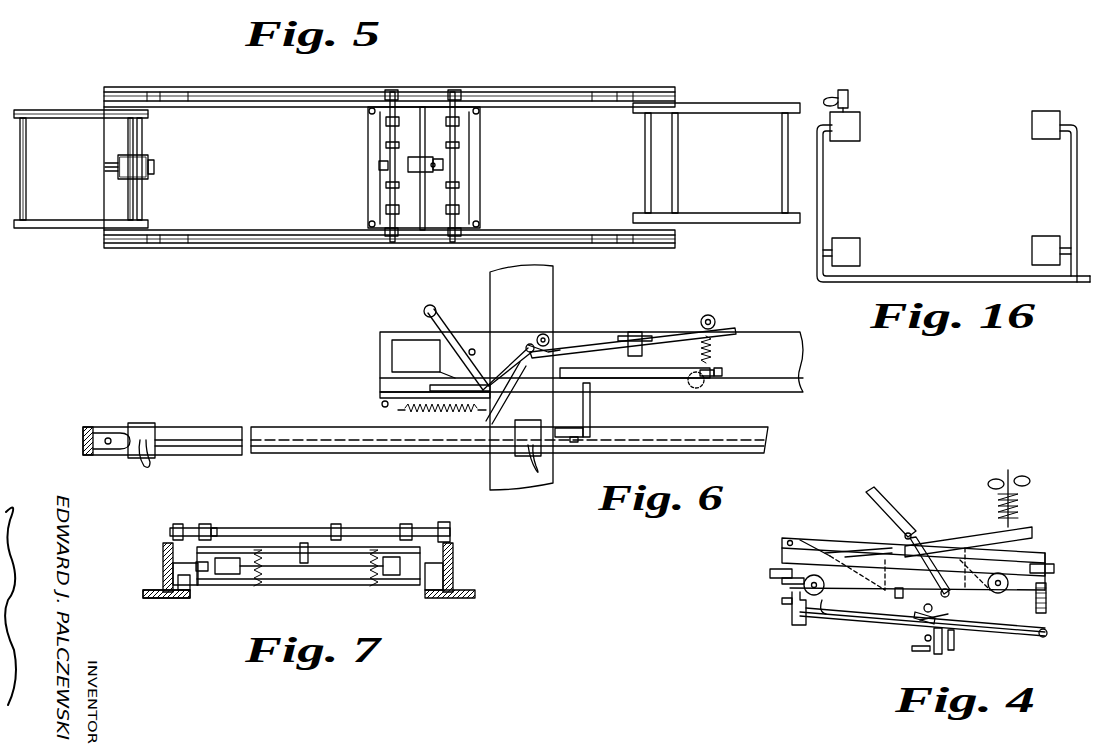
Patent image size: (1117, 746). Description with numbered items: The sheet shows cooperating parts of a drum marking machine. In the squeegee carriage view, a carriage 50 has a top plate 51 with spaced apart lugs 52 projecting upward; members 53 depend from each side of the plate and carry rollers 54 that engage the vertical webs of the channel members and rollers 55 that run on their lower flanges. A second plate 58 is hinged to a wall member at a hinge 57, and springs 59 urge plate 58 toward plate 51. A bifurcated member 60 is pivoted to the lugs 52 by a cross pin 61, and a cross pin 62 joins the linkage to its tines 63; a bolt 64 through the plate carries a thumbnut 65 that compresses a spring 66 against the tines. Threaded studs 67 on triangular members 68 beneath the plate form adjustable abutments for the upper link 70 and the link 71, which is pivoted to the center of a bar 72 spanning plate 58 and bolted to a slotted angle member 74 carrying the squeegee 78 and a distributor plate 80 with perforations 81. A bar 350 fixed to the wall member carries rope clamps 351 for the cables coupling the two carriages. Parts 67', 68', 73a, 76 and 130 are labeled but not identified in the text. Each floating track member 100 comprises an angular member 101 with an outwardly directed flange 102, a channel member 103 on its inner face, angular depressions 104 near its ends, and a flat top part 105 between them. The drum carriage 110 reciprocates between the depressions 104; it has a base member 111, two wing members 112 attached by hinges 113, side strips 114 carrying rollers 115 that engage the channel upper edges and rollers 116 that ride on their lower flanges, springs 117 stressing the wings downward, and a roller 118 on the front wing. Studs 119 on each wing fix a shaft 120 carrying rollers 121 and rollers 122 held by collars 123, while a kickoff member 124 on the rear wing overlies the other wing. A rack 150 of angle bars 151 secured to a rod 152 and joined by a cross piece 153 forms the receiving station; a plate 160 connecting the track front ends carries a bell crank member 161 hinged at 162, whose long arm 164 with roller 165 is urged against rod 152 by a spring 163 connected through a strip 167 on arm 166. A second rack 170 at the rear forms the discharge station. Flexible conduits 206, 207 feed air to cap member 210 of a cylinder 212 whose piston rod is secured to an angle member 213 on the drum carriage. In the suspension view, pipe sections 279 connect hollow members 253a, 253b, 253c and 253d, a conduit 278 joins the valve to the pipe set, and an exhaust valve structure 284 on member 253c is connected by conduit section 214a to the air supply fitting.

In FIG. 4, the carriage 50 is at (810, 626).
In FIG. 4, the top plate 51 is at (1036, 551).
In FIG. 4, the lugs 52 is at (782, 548).
In FIG. 4, the members 53 is at (783, 584).
In FIG. 4, the rollers 54 is at (770, 573).
In FIG. 4, the rollers 55 is at (826, 590).
In FIG. 4, the hinge 57 is at (830, 614).
In FIG. 4, the second plate 58 is at (1040, 638).
In FIG. 4, the springs 59 is at (1046, 608).
In FIG. 4, the bifurcated member 60 is at (818, 538).
In FIG. 4, the cross pin 61 is at (790, 540).
In FIG. 4, the cross pin 62 is at (912, 533).
In FIG. 4, the tines 63 is at (970, 535).
In FIG. 4, the bolt 64 is at (1012, 487).
In FIG. 4, the thumbnut 65 is at (1026, 480).
In FIG. 4, the spring 66 is at (1020, 500).
In FIG. 4, the threaded studs 67 is at (906, 583).
In FIG. 4, the link 67' is at (936, 567).
In FIG. 4, the triangular members 68 is at (917, 586).
In FIG. 4, the lower plate 68' is at (978, 563).
In FIG. 4, the upper link 70 is at (880, 492).
In FIG. 4, the link 71 is at (948, 607).
In FIG. 4, the bar 72 is at (920, 616).
In FIG. 4, the connecting link 73a is at (940, 620).
In FIG. 4, the slotted angle member 74 is at (908, 628).
In FIG. 4, the pin 76 is at (926, 638).
In FIG. 4, the squeegee 78 is at (951, 651).
In FIG. 4, the distributor plate 80 is at (938, 654).
In FIG. 4, the perforations 81 is at (918, 652).
In FIG. 7, the track members 100 is at (465, 575).
In FIG. 7, the member 101 is at (162, 563).
In FIG. 5, the outwardly directed flanges 102 is at (256, 246).
In FIG. 7, the outwardly directed flanges 102 is at (150, 598).
In FIG. 7, the channel member 103 is at (183, 592).
In FIG. 5, the angular depressions 104 is at (600, 90).
In FIG. 6, the angular depressions 104 is at (548, 326).
In FIG. 6, the top part 105 is at (780, 330).
In FIG. 5, the drum conveying carriage 110 is at (432, 120).
In FIG. 6, the base member 111 is at (697, 366).
In FIG. 7, the base member 111 is at (344, 587).
In FIG. 6, the wing members 112 is at (597, 332).
In FIG. 7, the wing members 112 is at (290, 553).
In FIG. 6, the hinges 113 is at (641, 330).
In FIG. 7, the hinges 113 is at (394, 578).
In FIG. 7, the strip 114 is at (203, 583).
In FIG. 5, the rollers 115 is at (376, 112).
In FIG. 6, the rollers 115 is at (724, 370).
In FIG. 6, the rollers 116 is at (698, 386).
In FIG. 7, the rollers 116 is at (453, 566).
In FIG. 6, the springs 117 is at (718, 350).
In FIG. 7, the springs 117 is at (266, 586).
In FIG. 5, the roller 118 is at (379, 166).
In FIG. 7, the roller 118 is at (304, 563).
In FIG. 5, the studs 119 is at (460, 146).
In FIG. 7, the studs 119 is at (405, 524).
In FIG. 5, the shaft 120 is at (458, 168).
In FIG. 7, the shaft 120 is at (337, 524).
In FIG. 5, the roller 121 is at (456, 96).
In FIG. 6, the roller 121 is at (548, 338).
In FIG. 7, the roller 121 is at (447, 524).
In FIG. 5, the roller 122 is at (462, 212).
In FIG. 7, the roller 122 is at (206, 524).
In FIG. 5, the collars 123 is at (460, 204).
In FIG. 7, the collars 123 is at (216, 531).
In FIG. 5, the kickoff member 124 is at (436, 174).
In FIG. 6, the kickoff member 124 is at (618, 318).
In FIG. 4, the plate 130 is at (850, 548).
In FIG. 5, the rack 150 is at (36, 229).
In FIG. 5, the angle bars 151 is at (60, 109).
In FIG. 5, the rod 152 is at (140, 136).
In FIG. 6, the rod 152 is at (474, 350).
In FIG. 5, the cross piece 153 is at (25, 160).
In FIG. 5, the plate 160 is at (107, 192).
In FIG. 6, the plate 160 is at (390, 396).
In FIG. 5, the bell crank member 161 is at (122, 158).
In FIG. 6, the bell crank member 161 is at (448, 330).
In FIG. 6, the hinge 162 is at (423, 359).
In FIG. 6, the spring 163 is at (440, 418).
In FIG. 6, the long arm 164 is at (460, 348).
In FIG. 6, the roller 165 is at (436, 300).
In FIG. 6, the arm 166 is at (534, 329).
In FIG. 6, the strip 167 is at (498, 410).
In FIG. 5, the second rack 170 is at (727, 103).
In FIG. 6, the flexible conduit 206 is at (138, 454).
In FIG. 6, the flexible conduit 207 is at (526, 450).
In FIG. 6, the cap member 210 is at (145, 422).
In FIG. 6, the cylinder 212 is at (312, 428).
In FIG. 6, the angle member 213 is at (592, 408).
In FIG. 16, the conduit section 214a is at (834, 84).
In FIG. 16, the conduit 278 is at (1086, 279).
In FIG. 16, the pipe sections 279 is at (824, 182).
In FIG. 16, the exhaust valve structure 284 is at (850, 99).
In FIG. 16, the hollow member 253a is at (1044, 240).
In FIG. 16, the hollow member 253b is at (862, 244).
In FIG. 16, the hollow member 253c is at (860, 127).
In FIG. 16, the hollow member 253d is at (1032, 124).
In FIG. 4, the bar 350 is at (792, 620).
In FIG. 4, the rope clamp 351 is at (783, 602).